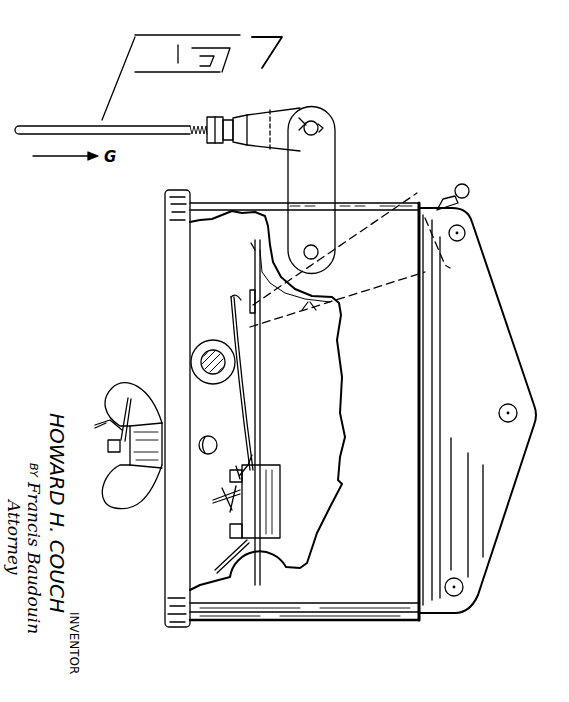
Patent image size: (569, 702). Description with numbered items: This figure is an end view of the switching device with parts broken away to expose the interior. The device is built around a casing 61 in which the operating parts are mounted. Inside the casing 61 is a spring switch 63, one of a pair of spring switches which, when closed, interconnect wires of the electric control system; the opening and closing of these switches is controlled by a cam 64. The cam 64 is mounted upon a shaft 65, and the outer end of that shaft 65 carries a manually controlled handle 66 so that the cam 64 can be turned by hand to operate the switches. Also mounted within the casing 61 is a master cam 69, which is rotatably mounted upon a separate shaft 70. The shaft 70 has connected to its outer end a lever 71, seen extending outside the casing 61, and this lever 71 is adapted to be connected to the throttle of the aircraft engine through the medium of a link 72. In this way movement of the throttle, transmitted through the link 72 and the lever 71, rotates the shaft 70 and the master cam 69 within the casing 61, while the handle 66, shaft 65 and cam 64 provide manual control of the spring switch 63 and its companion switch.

The casing 61 is at (375, 228).
The spring switch 63 is at (262, 473).
The cam 64 is at (198, 346).
The shaft 65 is at (203, 360).
The manually controlled handle 66 is at (385, 268).
The master cam 69 is at (258, 236).
The shaft 70 is at (314, 245).
The lever 71 is at (310, 168).
The link 72 is at (177, 130).